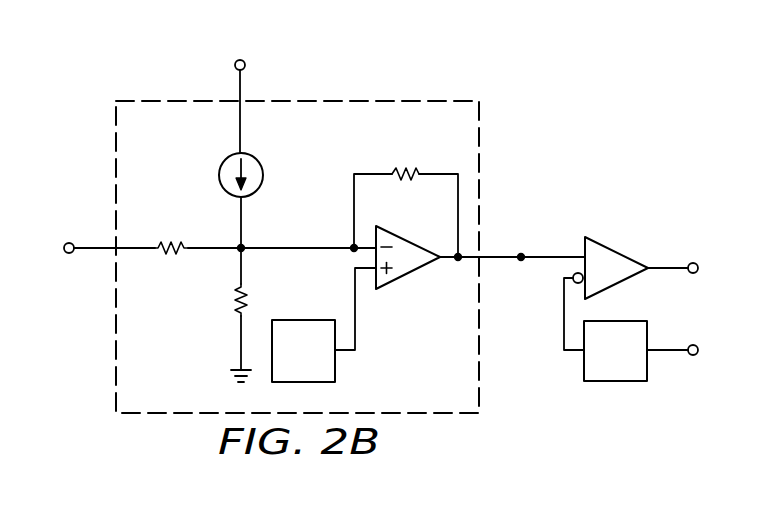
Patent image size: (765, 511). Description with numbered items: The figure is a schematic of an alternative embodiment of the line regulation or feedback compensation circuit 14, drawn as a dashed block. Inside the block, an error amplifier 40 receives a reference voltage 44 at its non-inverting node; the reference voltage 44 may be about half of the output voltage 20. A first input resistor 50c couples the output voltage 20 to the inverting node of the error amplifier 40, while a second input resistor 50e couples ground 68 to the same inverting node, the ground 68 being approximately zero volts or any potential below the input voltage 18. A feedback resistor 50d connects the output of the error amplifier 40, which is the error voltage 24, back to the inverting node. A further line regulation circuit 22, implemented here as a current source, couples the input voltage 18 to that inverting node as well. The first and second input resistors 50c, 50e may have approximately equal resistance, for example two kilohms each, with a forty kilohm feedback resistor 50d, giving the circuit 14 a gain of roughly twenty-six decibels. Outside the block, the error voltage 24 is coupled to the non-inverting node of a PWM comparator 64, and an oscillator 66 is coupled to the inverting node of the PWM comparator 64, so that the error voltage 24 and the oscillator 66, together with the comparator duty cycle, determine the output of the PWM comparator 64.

The line regulation circuit 14 is at (116, 300).
The input voltage 18 is at (235, 65).
The output voltage 20 is at (66, 243).
The line regulation circuit 22 is at (219, 175).
The error voltage 24 is at (521, 260).
The error amplifier 40 is at (405, 242).
The reference voltage 44 is at (305, 320).
The first input resistor 50c is at (159, 243).
The feedback resistor 50d is at (410, 172).
The second input resistor 50e is at (237, 297).
The PWM comparator 64 is at (615, 253).
The oscillator 66 is at (616, 382).
The ground 68 is at (233, 373).